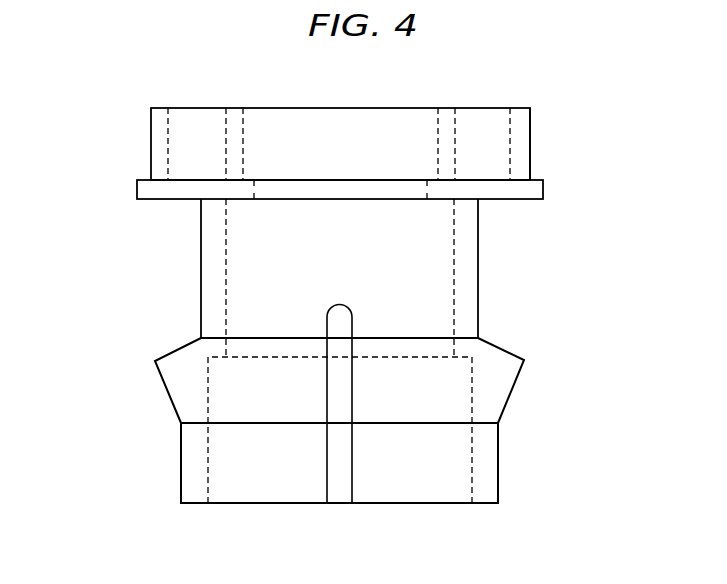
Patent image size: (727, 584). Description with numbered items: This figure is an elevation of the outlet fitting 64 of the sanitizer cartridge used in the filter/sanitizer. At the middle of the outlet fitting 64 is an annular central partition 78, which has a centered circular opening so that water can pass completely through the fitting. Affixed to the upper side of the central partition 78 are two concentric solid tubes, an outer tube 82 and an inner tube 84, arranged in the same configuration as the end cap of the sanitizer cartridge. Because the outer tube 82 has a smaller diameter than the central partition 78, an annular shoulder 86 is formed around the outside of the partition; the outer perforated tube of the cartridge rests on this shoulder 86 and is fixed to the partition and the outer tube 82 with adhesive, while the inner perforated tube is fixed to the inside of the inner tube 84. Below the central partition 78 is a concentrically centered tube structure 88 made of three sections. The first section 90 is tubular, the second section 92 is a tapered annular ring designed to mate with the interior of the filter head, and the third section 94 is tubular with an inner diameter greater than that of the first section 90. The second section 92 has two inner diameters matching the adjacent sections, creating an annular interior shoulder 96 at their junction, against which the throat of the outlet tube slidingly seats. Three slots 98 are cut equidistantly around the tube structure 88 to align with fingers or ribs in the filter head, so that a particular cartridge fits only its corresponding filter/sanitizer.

The outlet fitting 64 is at (98, 186).
The annular central partition 78 is at (532, 190).
The outer tube 82 is at (525, 108).
The inner tube 84 is at (445, 108).
The annular shoulder 86 is at (535, 179).
The tube structure 88 is at (173, 325).
The first section 90 is at (481, 291).
The second section 92 is at (524, 358).
The third section 94 is at (500, 458).
The annular interior shoulder 96 is at (218, 362).
The slots 98 is at (351, 483).